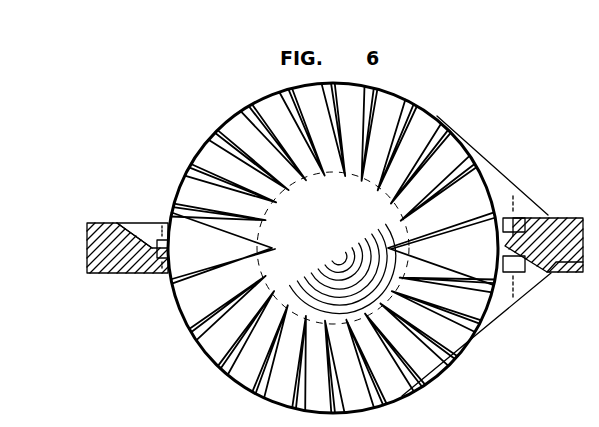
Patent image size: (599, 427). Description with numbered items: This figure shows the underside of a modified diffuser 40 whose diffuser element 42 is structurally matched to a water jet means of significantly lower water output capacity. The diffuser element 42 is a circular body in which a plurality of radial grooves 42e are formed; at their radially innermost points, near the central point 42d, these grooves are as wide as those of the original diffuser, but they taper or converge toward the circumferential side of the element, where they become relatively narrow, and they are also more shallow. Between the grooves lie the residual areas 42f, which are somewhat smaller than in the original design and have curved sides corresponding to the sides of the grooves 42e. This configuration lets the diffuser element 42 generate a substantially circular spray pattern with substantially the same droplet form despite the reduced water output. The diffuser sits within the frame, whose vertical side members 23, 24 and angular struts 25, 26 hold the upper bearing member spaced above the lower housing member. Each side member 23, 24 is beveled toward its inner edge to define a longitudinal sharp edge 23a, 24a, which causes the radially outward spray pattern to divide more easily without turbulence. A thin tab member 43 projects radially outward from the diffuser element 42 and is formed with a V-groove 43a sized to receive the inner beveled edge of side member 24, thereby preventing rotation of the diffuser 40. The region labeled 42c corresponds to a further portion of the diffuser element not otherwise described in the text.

The diffuser 40 is at (307, 248).
The diffuser element 42 is at (441, 112).
The tooth 42c is at (232, 128).
The grooves 42e is at (206, 140).
The residual areas 42f is at (188, 258).
The point 42d is at (331, 255).
The side member 23 is at (92, 256).
The angular strut 25 is at (135, 223).
The longitudinal sharp edge 23a is at (158, 236).
The side member 24 is at (571, 217).
The longitudinal sharp edge 24a is at (500, 247).
The angular strut 26 is at (548, 214).
The tab member 43 is at (520, 298).
The V-groove 43a is at (564, 266).